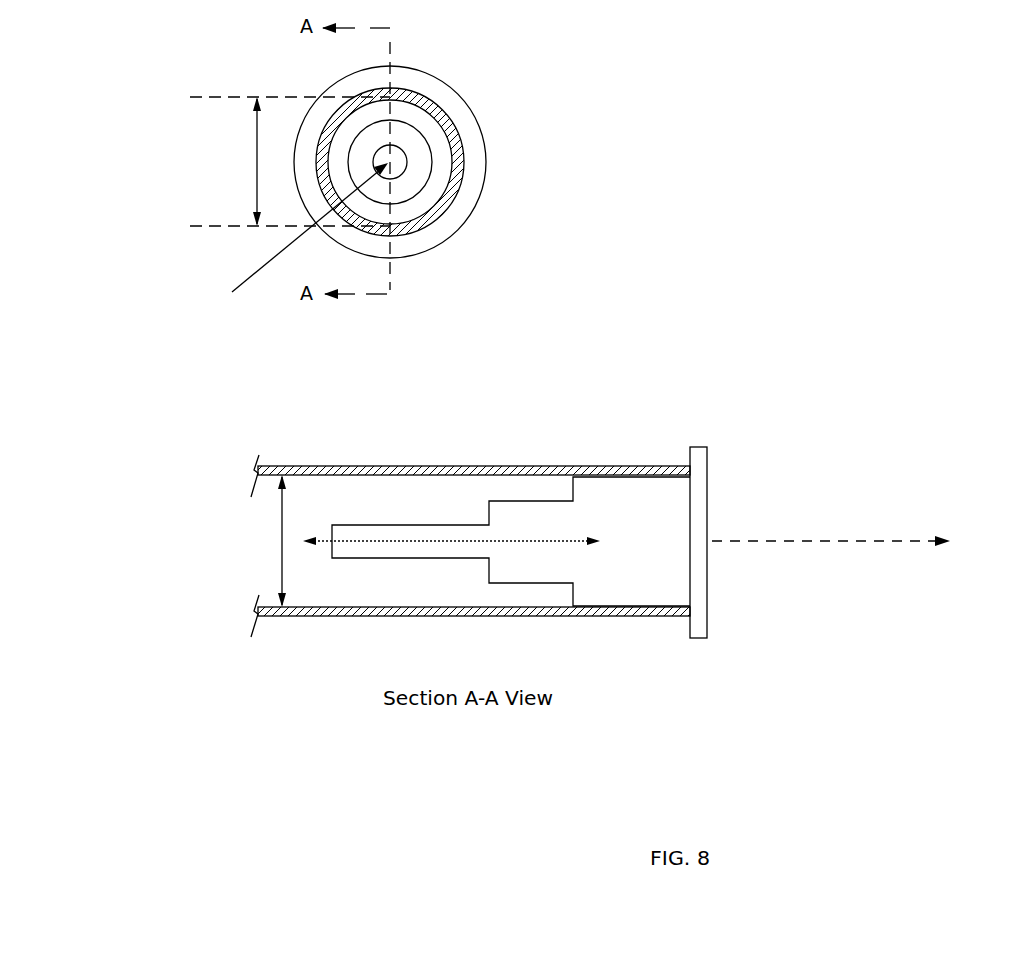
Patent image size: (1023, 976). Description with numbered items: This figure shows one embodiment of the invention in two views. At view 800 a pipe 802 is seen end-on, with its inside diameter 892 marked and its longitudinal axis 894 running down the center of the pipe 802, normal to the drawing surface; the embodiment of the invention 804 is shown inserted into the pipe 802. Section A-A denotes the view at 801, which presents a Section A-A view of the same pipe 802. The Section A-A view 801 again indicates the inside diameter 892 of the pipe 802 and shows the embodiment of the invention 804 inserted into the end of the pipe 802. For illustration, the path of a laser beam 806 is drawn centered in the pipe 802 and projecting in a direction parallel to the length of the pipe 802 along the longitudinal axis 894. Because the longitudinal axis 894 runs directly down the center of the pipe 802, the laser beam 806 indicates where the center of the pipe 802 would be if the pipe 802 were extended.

The view 800 is at (503, 55).
The Section A-A view 801 is at (760, 357).
The pipe 802 is at (457, 143).
The embodiment of the invention 804 is at (418, 160).
The laser beam 806 is at (858, 541).
The inside diameter (ID) 892 is at (290, 352).
The longitudinal axis of the pipe 894 is at (462, 443).